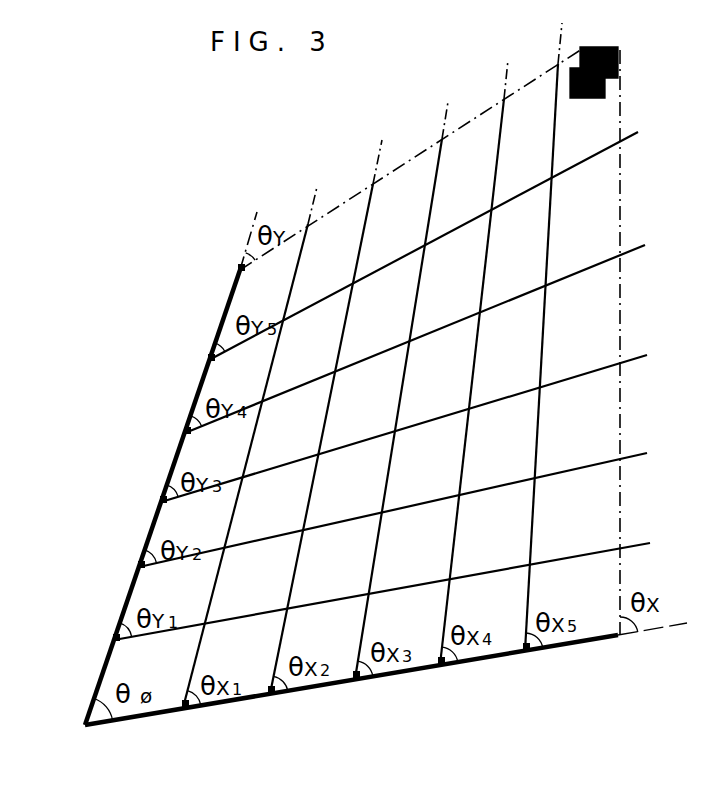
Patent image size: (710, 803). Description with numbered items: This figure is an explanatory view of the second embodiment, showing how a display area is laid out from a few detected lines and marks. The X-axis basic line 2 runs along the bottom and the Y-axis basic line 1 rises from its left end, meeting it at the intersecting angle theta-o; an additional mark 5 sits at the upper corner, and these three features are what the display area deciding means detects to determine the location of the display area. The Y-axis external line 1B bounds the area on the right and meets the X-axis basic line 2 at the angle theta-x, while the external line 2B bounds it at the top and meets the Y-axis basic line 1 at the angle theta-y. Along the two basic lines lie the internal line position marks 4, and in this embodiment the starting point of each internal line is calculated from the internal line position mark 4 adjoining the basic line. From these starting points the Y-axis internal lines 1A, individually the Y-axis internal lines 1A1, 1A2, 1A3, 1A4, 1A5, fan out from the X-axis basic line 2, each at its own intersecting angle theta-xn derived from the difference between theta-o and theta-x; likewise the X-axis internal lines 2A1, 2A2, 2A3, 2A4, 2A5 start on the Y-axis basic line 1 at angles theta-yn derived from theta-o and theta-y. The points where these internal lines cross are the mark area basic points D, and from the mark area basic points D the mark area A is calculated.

The Y-axis basic line 1 is at (170, 472).
The X-axis basic line 2 is at (492, 660).
The internal line position marks 4 is at (137, 567).
The additional mark 5 is at (618, 60).
The Y-axis internal lines 1A is at (411, 386).
The Y-axis external line 1B is at (622, 200).
The external line of the display area 2B is at (519, 88).
The mark area A is at (587, 427).
The mark area basic points D is at (535, 557).
The Y-axis internal line 1A1 is at (270, 373).
The Y-axis internal line 1A2 is at (342, 347).
The Y-axis internal line 1A3 is at (413, 320).
The Y-axis internal line 1A4 is at (483, 234).
The Y-axis internal line 1A5 is at (542, 270).
The X-axis internal line 2A1 is at (470, 577).
The X-axis internal line 2A2 is at (472, 493).
The X-axis internal line 2A3 is at (483, 405).
The X-axis internal line 2A4 is at (490, 300).
The X-axis internal line 2A5 is at (502, 203).